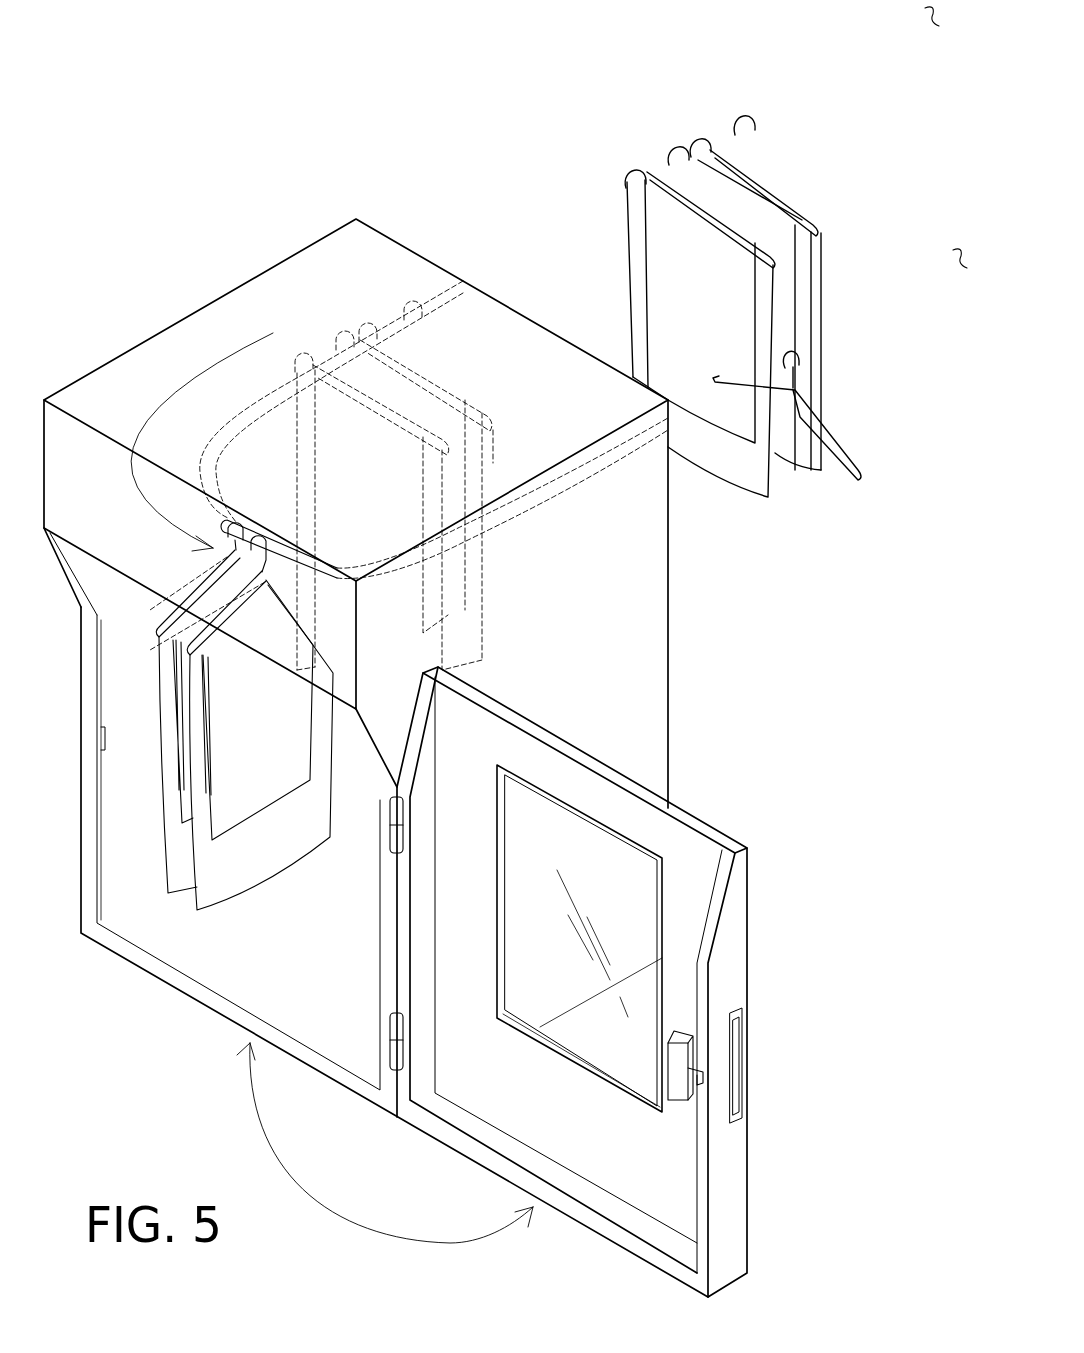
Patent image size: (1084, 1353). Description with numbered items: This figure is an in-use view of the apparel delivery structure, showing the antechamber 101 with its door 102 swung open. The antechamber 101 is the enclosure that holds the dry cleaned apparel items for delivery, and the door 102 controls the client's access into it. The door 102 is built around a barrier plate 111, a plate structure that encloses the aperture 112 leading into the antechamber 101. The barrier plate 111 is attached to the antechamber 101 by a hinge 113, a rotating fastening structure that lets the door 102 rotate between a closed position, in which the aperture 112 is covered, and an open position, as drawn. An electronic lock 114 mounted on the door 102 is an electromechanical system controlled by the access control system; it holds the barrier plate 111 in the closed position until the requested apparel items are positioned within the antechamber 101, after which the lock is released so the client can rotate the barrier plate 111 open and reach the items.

The antechamber 101 is at (620, 662).
The door 102 is at (625, 982).
The barrier plate 111 is at (690, 852).
The aperture 112 is at (230, 957).
The hinge 113 is at (393, 1033).
The electronic lock 114 is at (680, 1087).